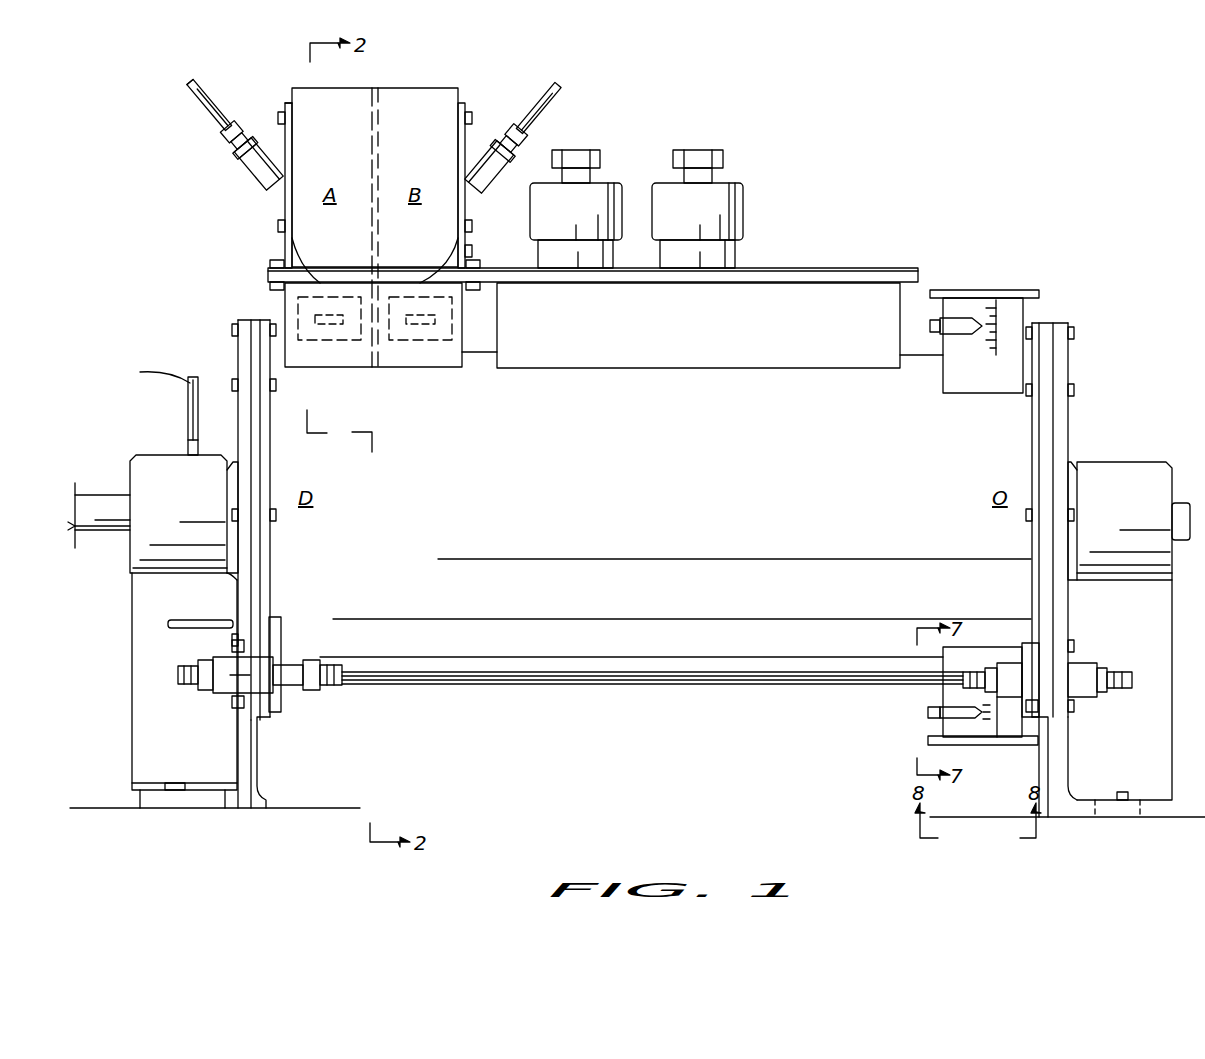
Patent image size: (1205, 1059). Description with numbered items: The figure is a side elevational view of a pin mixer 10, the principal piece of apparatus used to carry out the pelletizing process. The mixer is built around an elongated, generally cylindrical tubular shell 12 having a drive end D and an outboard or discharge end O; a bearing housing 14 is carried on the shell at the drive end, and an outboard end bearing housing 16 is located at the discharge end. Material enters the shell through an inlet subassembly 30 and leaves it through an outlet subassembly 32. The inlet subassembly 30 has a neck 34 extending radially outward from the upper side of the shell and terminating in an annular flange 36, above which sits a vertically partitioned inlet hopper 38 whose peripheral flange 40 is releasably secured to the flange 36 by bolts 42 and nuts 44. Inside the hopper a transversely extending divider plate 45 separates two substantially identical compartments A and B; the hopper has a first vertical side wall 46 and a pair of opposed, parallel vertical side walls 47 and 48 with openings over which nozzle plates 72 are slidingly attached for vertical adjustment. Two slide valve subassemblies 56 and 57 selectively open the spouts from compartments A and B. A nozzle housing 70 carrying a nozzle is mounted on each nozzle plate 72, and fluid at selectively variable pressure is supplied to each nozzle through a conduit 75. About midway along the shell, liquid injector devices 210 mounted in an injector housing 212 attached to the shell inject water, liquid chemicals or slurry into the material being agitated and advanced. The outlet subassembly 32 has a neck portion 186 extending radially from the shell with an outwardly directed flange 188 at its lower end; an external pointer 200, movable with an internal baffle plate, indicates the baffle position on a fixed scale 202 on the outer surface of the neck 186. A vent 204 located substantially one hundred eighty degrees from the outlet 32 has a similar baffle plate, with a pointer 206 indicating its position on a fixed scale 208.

The pin mixer 10 is at (880, 192).
The tubular shell 12 is at (675, 621).
The bearing housing 14 is at (150, 462).
The outboard end bearing housing 16 is at (1125, 475).
The inlet subassembly 30 is at (460, 86).
The outlet subassembly 32 is at (1023, 750).
The neck 34 is at (360, 355).
The annular flange 36 is at (279, 228).
The inlet hopper 38 is at (306, 180).
The peripheral flange 40 is at (472, 227).
The bolts 42 is at (272, 266).
The nuts 44 is at (482, 284).
The divider plate 45 is at (380, 172).
The first side wall 46 is at (329, 123).
The side wall 47 is at (290, 100).
The side wall 48 is at (466, 252).
The slide valve subassembly 56 is at (452, 322).
The slide valve subassembly 57 is at (348, 292).
The nozzle housing 70 is at (258, 160).
The nozzle plate 72 is at (288, 106).
The conduit 75 is at (207, 98).
The neck portion 186 is at (957, 725).
The outwardly directed flange 188 is at (928, 743).
The external pointer 200 is at (958, 714).
The fixed scale 202 is at (972, 709).
The vent 204 is at (972, 290).
The pointer 206 is at (952, 320).
The fixed scale 208 is at (1000, 318).
The liquid injector devices 210 is at (598, 190).
The injector housing 212 is at (780, 296).